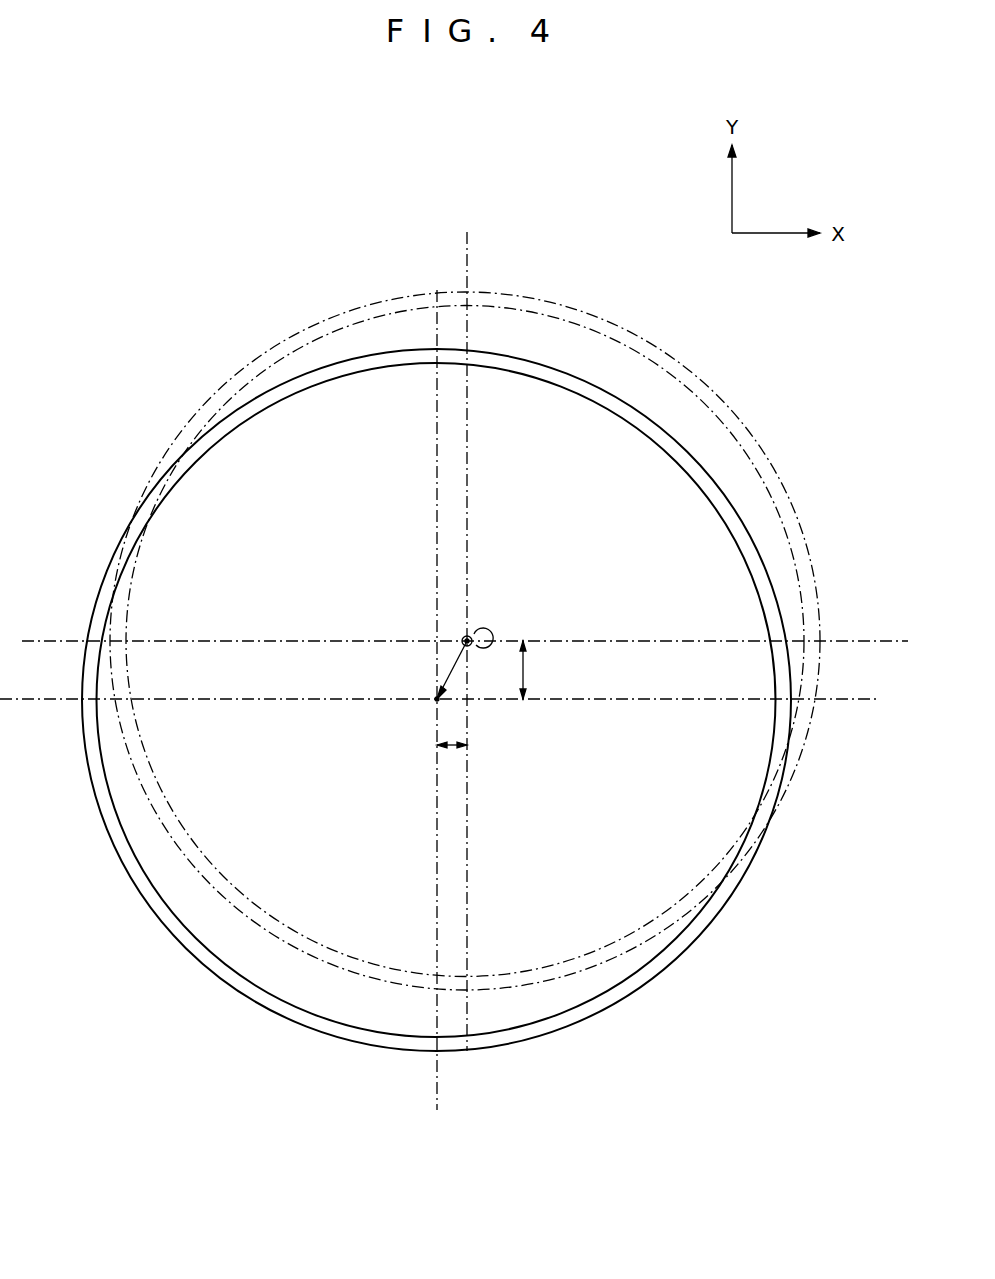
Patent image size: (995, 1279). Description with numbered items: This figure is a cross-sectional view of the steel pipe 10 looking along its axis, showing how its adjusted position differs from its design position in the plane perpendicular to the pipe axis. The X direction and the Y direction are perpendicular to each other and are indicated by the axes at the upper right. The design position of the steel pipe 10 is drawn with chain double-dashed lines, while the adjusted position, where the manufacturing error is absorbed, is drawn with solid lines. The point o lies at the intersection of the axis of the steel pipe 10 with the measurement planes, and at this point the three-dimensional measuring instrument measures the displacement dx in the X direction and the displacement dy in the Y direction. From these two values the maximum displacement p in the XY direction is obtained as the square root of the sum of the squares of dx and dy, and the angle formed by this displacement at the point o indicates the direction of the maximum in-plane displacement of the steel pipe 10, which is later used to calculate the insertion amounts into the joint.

The steel pipe 10 is at (600, 1008).
The point o is at (430, 708).
The maximum displacement in the XY direction p is at (452, 670).
The displacement in the X direction dx is at (452, 735).
The displacement in the Y direction dy is at (535, 670).